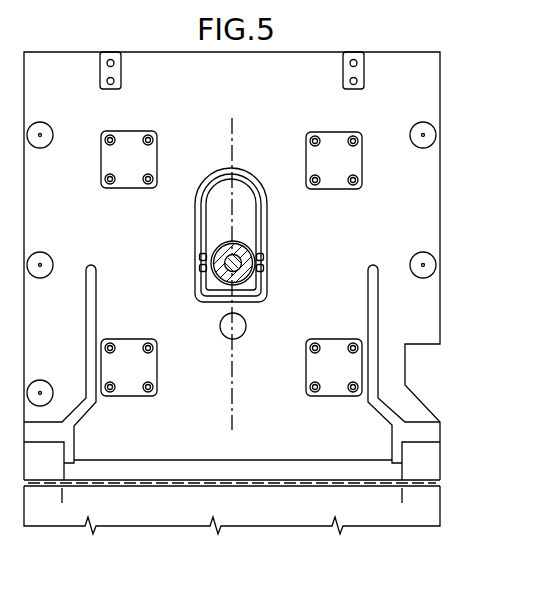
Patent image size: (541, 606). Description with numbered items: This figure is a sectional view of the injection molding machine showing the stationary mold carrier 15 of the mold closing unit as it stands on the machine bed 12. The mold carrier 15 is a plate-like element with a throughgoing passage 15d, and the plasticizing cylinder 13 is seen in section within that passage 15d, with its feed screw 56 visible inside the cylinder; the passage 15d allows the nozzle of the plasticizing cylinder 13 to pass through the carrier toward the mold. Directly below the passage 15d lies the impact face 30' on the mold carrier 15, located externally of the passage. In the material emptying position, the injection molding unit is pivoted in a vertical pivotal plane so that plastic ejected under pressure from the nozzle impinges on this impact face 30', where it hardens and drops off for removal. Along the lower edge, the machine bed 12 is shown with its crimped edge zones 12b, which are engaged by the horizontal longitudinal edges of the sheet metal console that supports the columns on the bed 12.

The stationary mold carrier 15 is at (452, 83).
The throughgoing passage 15d is at (217, 218).
The plasticizing cylinder 13 is at (256, 283).
The feed screw 56 is at (258, 252).
The impact face 30' is at (251, 344).
The machine bed 12 is at (278, 518).
The crimped edge zones 12b is at (423, 488).